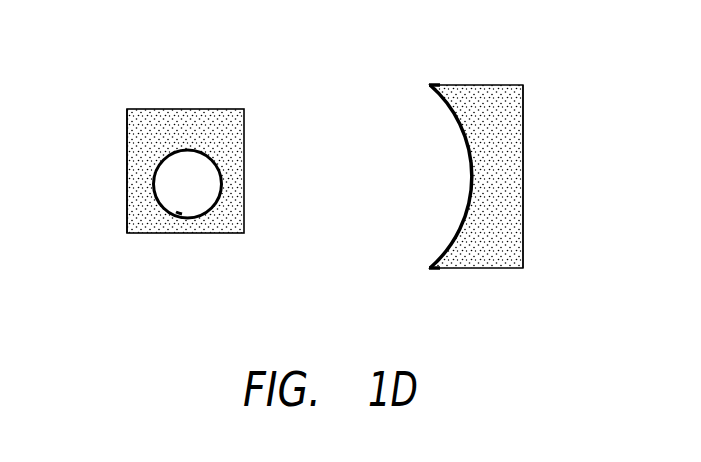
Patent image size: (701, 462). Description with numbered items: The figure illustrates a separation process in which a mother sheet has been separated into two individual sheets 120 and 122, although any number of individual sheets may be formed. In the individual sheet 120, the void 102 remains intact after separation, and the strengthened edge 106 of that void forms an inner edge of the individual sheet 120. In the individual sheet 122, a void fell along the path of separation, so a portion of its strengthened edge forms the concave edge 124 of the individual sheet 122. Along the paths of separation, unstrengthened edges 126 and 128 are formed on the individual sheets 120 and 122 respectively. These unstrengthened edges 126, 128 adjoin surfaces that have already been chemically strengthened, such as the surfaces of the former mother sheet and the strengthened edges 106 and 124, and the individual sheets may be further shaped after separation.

The individual sheet 120 is at (180, 118).
The unstrengthened edge 126 is at (127, 133).
The strengthened edge 106 is at (153, 190).
The void 102 is at (178, 212).
The individual sheet 122 is at (488, 253).
The edge 124 is at (453, 90).
The unstrengthened edge 128 is at (523, 218).